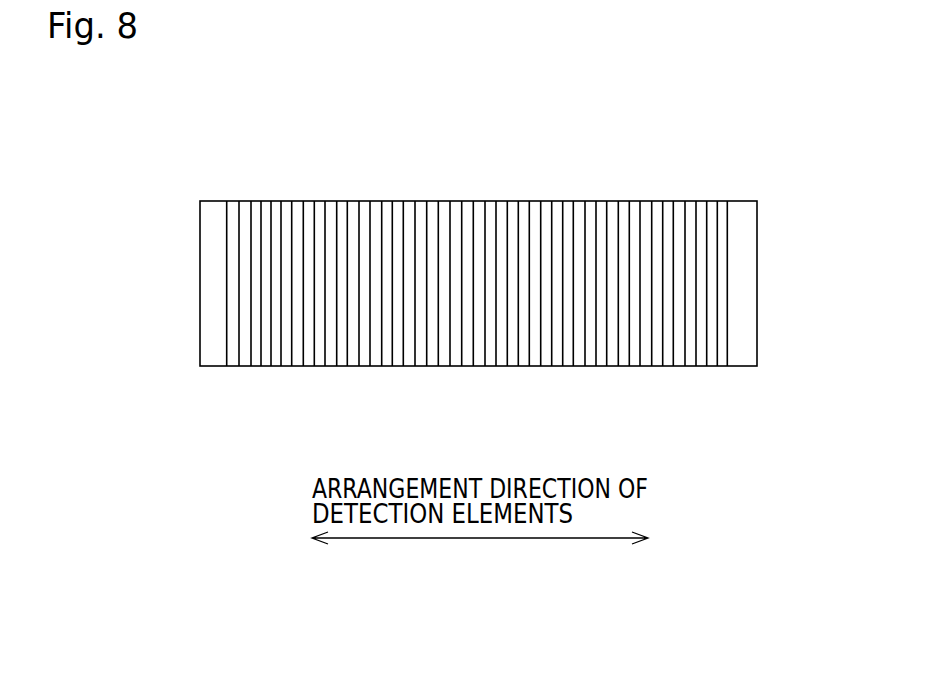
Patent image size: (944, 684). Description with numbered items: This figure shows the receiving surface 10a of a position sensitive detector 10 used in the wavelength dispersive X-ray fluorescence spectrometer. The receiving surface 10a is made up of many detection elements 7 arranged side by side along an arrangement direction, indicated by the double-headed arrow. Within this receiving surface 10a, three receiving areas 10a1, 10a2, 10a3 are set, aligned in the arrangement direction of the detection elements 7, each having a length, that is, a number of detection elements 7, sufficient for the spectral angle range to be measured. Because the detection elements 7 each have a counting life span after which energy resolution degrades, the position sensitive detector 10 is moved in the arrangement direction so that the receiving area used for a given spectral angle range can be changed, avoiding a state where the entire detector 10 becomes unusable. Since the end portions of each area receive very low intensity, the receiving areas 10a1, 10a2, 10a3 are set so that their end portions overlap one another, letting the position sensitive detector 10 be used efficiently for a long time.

The position sensitive detector 10 is at (200, 237).
The receiving surface 10a is at (310, 242).
The first receiving area 10a1 is at (428, 366).
The second receiving area 10a2 is at (575, 201).
The third receiving area 10a3 is at (727, 366).
The detection element 7 is at (682, 194).